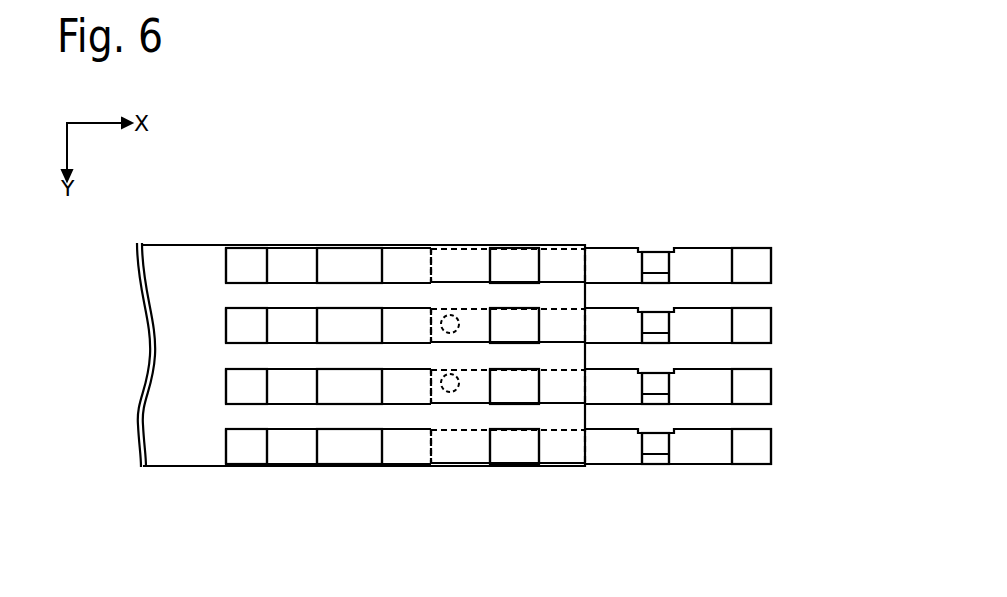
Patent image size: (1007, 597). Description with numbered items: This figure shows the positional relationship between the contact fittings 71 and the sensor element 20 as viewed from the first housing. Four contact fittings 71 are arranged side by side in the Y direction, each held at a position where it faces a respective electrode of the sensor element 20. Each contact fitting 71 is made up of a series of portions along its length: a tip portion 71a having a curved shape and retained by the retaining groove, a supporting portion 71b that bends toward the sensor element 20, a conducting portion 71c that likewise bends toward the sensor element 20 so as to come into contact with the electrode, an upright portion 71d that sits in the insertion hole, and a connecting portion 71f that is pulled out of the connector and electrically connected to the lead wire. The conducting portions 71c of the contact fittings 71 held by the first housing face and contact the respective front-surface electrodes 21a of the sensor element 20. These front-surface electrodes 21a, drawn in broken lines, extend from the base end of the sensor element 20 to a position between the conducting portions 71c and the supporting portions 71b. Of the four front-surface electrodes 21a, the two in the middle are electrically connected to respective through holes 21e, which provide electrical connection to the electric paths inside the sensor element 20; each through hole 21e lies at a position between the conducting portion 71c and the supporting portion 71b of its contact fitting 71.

The sensor element 20 is at (180, 283).
The contact fittings 71 is at (787, 267).
The tip portion 71a is at (246, 327).
The supporting portion 71b is at (341, 326).
The conducting portion 71c is at (512, 322).
The upright portion 71d is at (648, 322).
The connecting portion 71f is at (745, 320).
The front-surface electrodes 21a is at (432, 330).
The through holes 21e is at (457, 317).